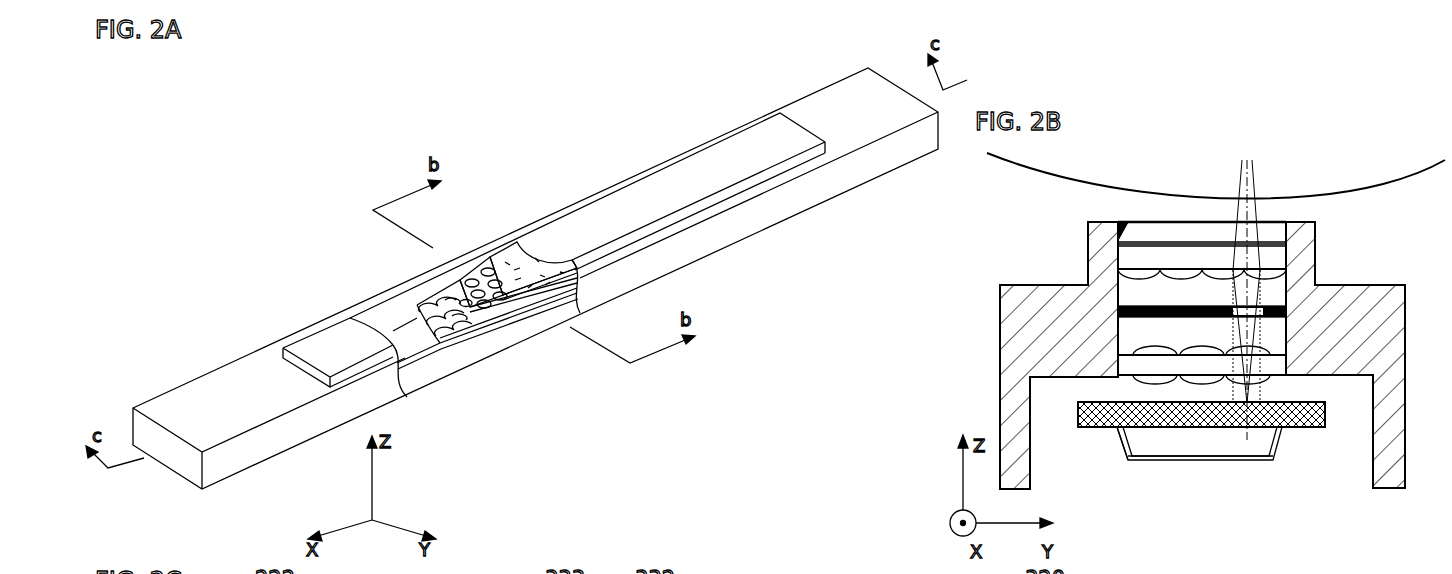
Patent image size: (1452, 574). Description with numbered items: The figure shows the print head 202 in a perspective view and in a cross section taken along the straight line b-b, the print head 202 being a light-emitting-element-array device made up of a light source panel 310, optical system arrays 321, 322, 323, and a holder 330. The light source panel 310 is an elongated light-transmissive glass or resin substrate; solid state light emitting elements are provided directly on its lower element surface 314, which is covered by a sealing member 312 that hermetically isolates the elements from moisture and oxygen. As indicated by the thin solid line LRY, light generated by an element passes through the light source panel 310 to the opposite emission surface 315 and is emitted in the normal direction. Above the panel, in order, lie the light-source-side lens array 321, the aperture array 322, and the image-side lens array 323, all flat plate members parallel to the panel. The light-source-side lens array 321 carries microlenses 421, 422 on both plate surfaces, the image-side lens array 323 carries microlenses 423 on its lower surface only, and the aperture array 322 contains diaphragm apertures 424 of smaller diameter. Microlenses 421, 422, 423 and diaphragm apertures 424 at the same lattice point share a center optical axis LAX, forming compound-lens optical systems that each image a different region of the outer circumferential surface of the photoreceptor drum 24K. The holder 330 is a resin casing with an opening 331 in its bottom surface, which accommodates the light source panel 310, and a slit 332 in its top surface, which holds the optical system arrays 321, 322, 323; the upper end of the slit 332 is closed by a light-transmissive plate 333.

In FIG. 2A, the print head 202 is at (250, 212).
In FIG. 2A, the light source panel 310 is at (418, 350).
In FIG. 2B, the light source panel 310 is at (1312, 438).
In FIG. 2B, the sealing member 312 is at (1200, 458).
In FIG. 2B, the element surface 314 is at (1178, 432).
In FIG. 2B, the emission surface 315 is at (1099, 430).
In FIG. 2A, the light-source-side lens array 321 is at (490, 342).
In FIG. 2B, the light-source-side lens array 321 is at (1117, 367).
In FIG. 2A, the aperture array 322 is at (525, 320).
In FIG. 2B, the aperture array 322 is at (1122, 316).
In FIG. 2A, the image-side lens array 323 is at (514, 242).
In FIG. 2B, the image-side lens array 323 is at (1128, 247).
In FIG. 2A, the holder 330 is at (708, 238).
In FIG. 2B, the holder 330 is at (990, 392).
In FIG. 2B, the opening 331 is at (1045, 420).
In FIG. 2B, the slit 332 is at (1132, 273).
In FIG. 2A, the light-transmissive plate 333 is at (560, 232).
In FIG. 2B, the light-transmissive plate 333 is at (1092, 227).
In FIG. 2B, the microlens 421 is at (1273, 382).
In FIG. 2B, the microlens 422 is at (1290, 341).
In FIG. 2B, the microlens 423 is at (1288, 284).
In FIG. 2B, the diaphragm aperture 424 is at (1252, 310).
In FIG. 2B, the photoreceptor drum 24K is at (1012, 178).
In FIG. 2B, the optical axis LAX is at (1246, 288).
In FIG. 2B, the emitted light LRY is at (1272, 434).